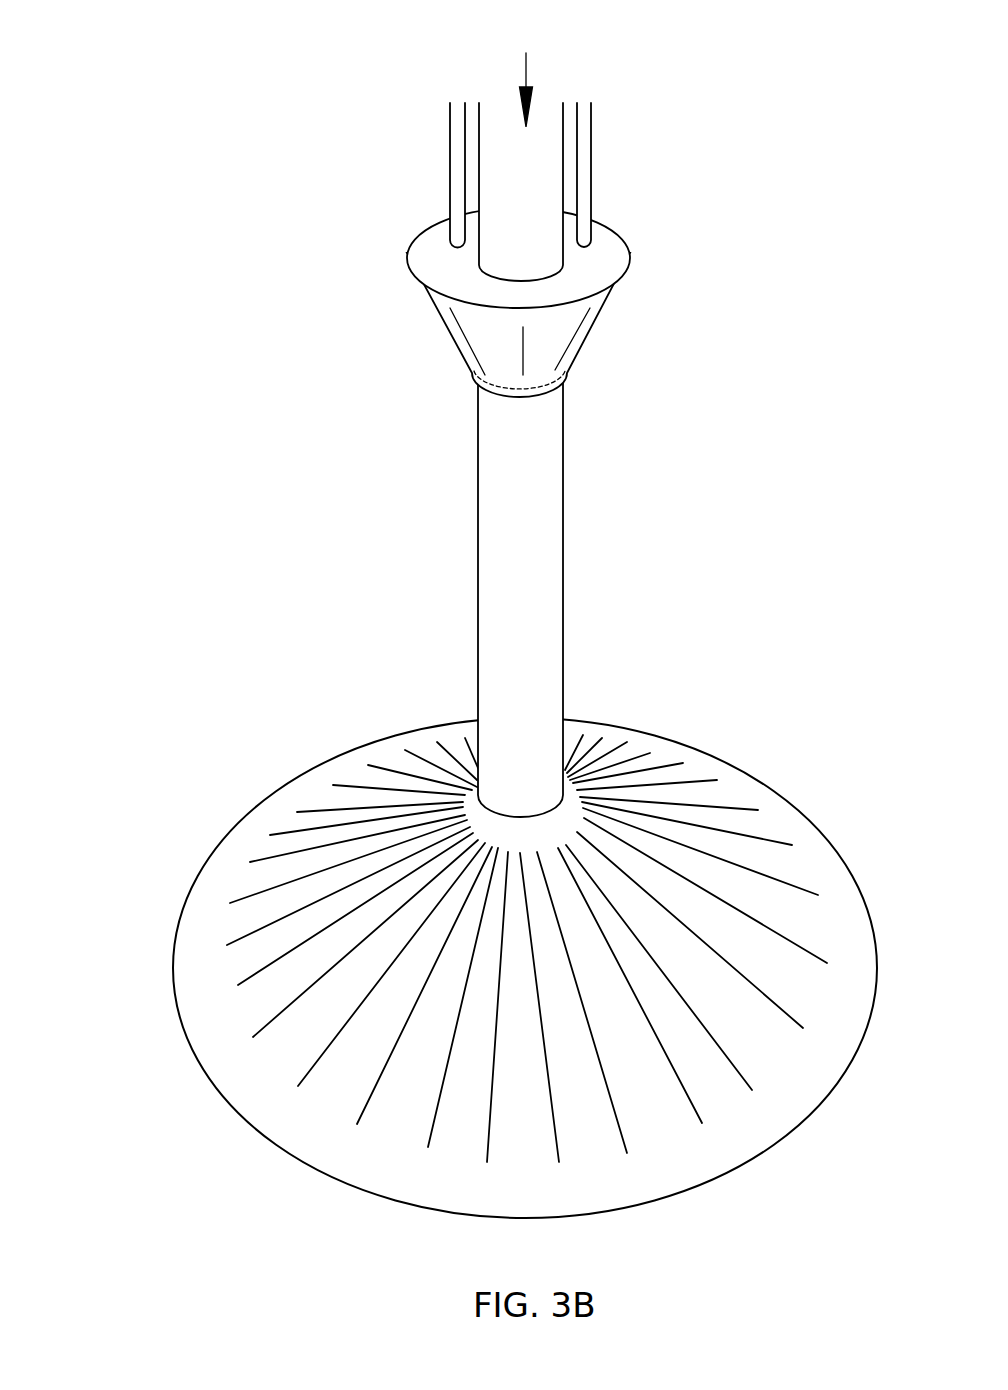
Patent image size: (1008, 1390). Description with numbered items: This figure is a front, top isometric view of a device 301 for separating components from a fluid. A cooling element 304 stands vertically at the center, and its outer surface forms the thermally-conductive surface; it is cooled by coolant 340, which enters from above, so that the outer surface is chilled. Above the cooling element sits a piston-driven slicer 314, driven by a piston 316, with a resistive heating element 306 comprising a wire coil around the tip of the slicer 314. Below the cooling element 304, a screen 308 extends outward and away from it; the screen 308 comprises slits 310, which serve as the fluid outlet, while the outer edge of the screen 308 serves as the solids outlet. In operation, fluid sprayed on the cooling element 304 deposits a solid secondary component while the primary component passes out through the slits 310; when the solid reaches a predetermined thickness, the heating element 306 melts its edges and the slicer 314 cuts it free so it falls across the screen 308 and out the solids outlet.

The device for separating components from a fluid 301 is at (165, 72).
The cooling element 304 is at (493, 463).
The resistive heating element 306 is at (565, 372).
The screen 308 is at (300, 772).
The slits 310 is at (413, 752).
The piston-driven slicer 314 is at (598, 296).
The piston 316 is at (580, 159).
The coolant 340 is at (524, 73).